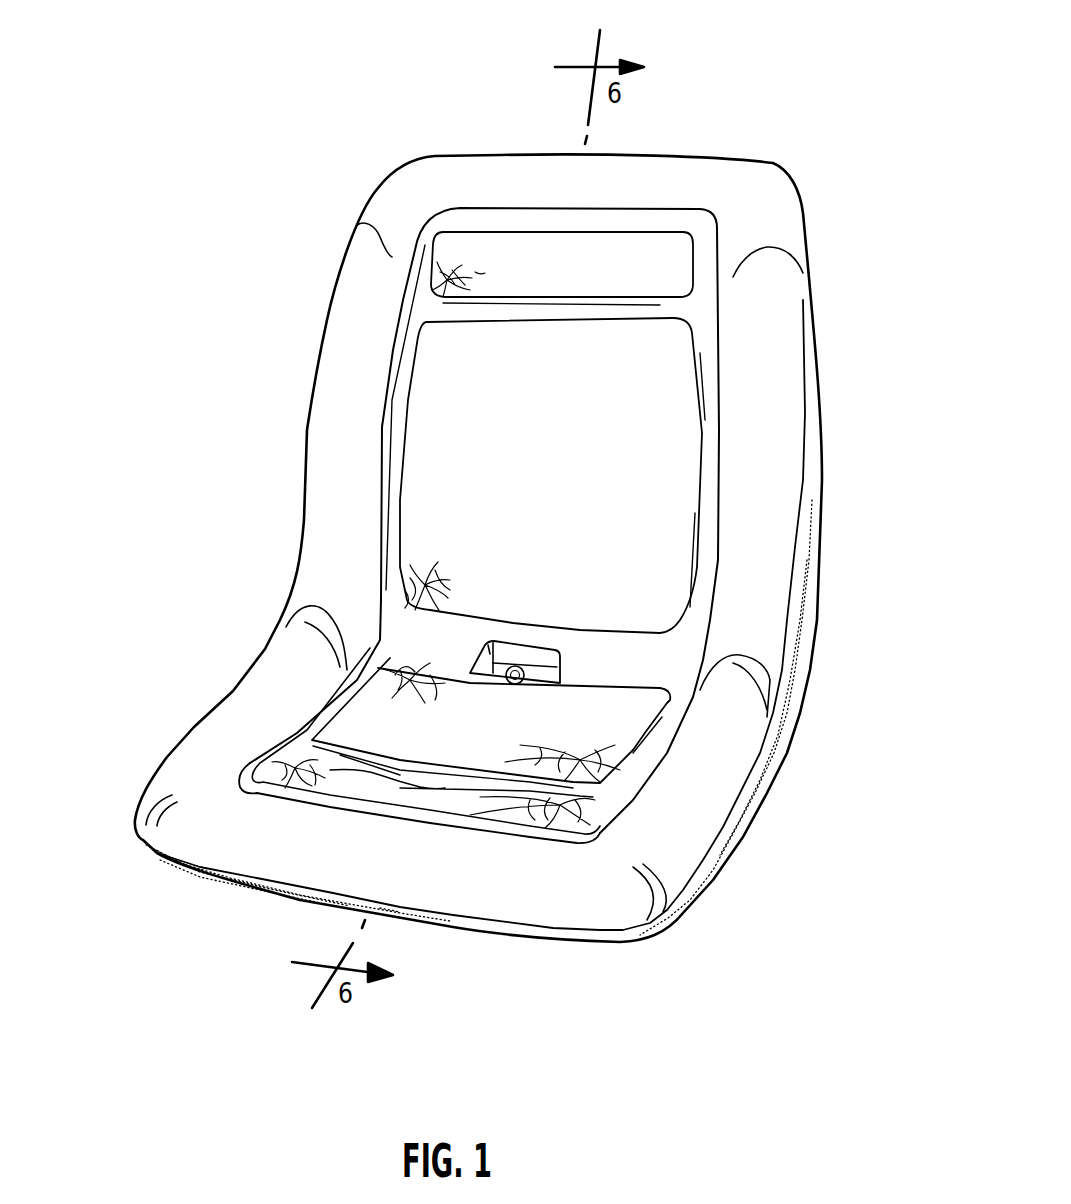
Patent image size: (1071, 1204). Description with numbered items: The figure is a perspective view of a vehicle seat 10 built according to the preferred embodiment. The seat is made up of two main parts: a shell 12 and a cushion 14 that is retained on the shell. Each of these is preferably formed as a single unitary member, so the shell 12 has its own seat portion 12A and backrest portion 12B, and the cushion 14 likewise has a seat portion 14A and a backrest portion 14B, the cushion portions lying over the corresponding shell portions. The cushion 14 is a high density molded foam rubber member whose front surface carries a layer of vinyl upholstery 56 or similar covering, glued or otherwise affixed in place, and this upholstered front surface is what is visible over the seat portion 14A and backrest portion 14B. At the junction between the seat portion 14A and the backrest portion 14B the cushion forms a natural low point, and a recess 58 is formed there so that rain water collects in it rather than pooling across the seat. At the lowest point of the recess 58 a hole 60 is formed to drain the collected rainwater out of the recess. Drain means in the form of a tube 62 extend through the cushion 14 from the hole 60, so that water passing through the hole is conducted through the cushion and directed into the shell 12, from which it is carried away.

The vehicle seat 10 is at (723, 115).
The shell 12 is at (828, 577).
The seat portion 12A is at (770, 782).
The backrest portion 12B is at (817, 342).
The cushion 14 is at (794, 168).
The seat portion 14A is at (201, 716).
The backrest portion 14B is at (316, 336).
The layer of vinyl upholstery 56 is at (775, 427).
The recess 58 is at (468, 668).
The hole 60 is at (520, 678).
The tube 62 is at (482, 667).